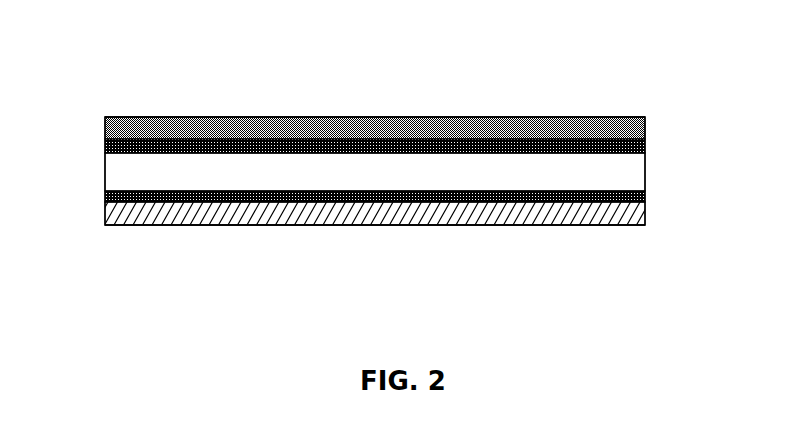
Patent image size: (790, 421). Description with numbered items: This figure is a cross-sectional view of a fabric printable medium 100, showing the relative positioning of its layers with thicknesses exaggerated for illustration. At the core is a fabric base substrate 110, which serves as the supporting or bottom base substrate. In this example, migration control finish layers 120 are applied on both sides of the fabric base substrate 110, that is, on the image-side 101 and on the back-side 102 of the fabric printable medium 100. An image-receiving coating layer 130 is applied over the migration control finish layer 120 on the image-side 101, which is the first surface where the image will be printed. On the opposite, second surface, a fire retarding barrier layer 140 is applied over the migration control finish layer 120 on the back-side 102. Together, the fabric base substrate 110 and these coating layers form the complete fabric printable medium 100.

The fabric printable medium 100 is at (478, 90).
The image-side 101 is at (215, 90).
The back-side 102 is at (210, 230).
The fabric base substrate 110 is at (645, 172).
The migration control finish layer 120 is at (105, 148).
The image-receiving coating layer 130 is at (645, 130).
The fire retarding barrier layer 140 is at (106, 207).